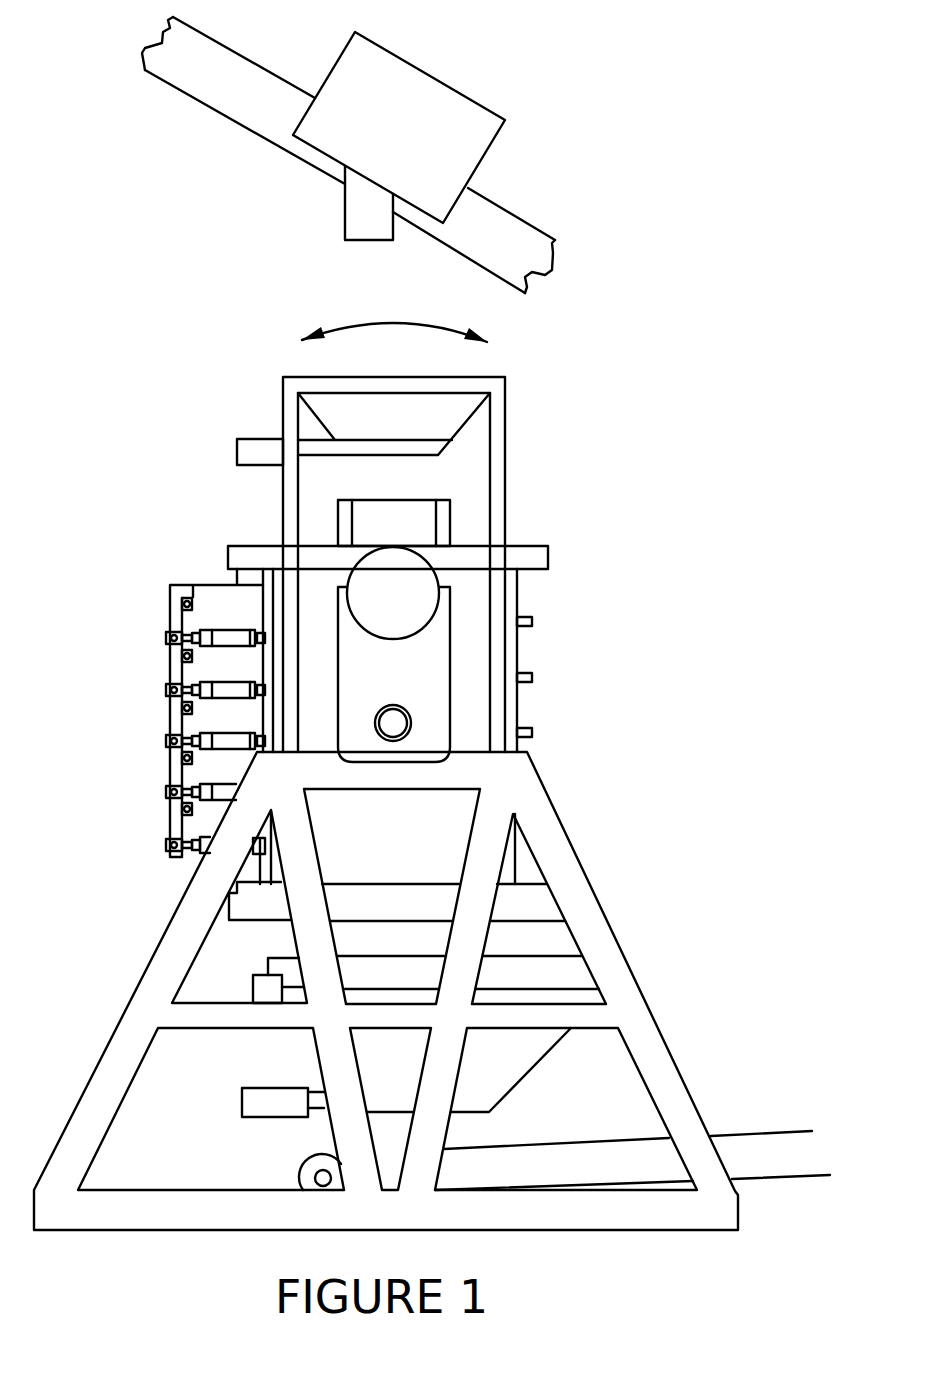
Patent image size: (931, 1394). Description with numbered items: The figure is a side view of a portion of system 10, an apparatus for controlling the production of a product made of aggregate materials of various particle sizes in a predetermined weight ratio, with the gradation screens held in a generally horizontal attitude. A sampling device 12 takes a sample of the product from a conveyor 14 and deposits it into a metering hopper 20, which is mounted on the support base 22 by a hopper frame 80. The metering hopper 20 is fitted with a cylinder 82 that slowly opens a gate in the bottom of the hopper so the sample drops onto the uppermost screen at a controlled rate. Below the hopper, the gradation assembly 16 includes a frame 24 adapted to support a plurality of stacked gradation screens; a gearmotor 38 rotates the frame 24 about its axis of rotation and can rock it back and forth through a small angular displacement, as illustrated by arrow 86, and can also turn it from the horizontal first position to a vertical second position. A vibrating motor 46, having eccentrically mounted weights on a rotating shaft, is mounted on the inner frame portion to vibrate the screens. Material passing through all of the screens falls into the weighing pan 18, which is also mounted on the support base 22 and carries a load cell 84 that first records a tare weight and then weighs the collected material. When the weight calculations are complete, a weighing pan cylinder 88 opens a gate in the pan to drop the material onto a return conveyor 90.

The system 10 is at (660, 66).
The sampling device 12 is at (393, 80).
The conveyor 14 is at (520, 240).
The gradation assembly 16 is at (606, 627).
The weighing pan 18 is at (503, 1067).
The metering hopper 20 is at (437, 407).
The support base 22 is at (548, 789).
The frame 24 is at (553, 550).
The gearmotor 38 is at (413, 600).
The vibrating motor 46 is at (372, 517).
The hopper frame 80 is at (510, 456).
The cylinder 82 is at (250, 448).
The load cell 84 is at (265, 989).
The arrow 86 is at (400, 323).
The weighing pan cylinder 88 is at (267, 1106).
The return conveyor 90 is at (766, 1152).